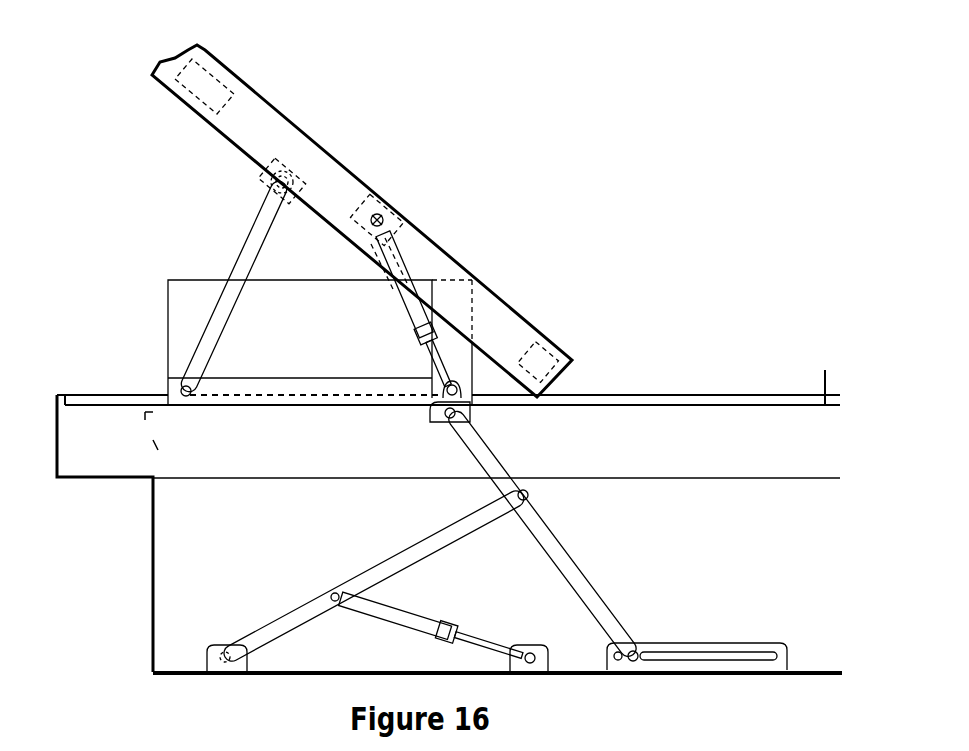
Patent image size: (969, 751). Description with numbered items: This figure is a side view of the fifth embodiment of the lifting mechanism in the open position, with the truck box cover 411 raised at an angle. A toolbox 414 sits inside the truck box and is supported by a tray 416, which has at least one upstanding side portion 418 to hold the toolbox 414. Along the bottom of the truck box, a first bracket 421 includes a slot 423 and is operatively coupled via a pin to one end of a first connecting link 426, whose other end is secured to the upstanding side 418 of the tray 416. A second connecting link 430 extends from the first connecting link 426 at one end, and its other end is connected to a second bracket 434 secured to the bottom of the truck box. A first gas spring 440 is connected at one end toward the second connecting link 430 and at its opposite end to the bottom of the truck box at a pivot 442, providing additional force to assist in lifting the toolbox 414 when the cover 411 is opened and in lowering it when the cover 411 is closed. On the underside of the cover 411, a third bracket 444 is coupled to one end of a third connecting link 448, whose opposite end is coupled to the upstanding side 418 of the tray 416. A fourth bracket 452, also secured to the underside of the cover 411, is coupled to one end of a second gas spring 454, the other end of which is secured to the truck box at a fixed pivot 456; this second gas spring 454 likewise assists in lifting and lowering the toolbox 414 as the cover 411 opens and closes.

The cover 411 is at (463, 267).
The toolbox 414 is at (168, 342).
The tray 416 is at (377, 433).
The upstanding side portion 418 is at (328, 387).
The first bracket 421 is at (778, 667).
The slot 423 is at (688, 655).
The first connecting link 426 is at (558, 545).
The second connecting link 430 is at (413, 553).
The second bracket 434 is at (207, 658).
The first gas spring 440 is at (380, 612).
The pivot 442 is at (546, 646).
The third bracket 444 is at (263, 182).
The third connecting link 448 is at (237, 257).
The fourth bracket 452 is at (380, 213).
The second gas spring 454 is at (409, 316).
The fixed pivot 456 is at (470, 410).